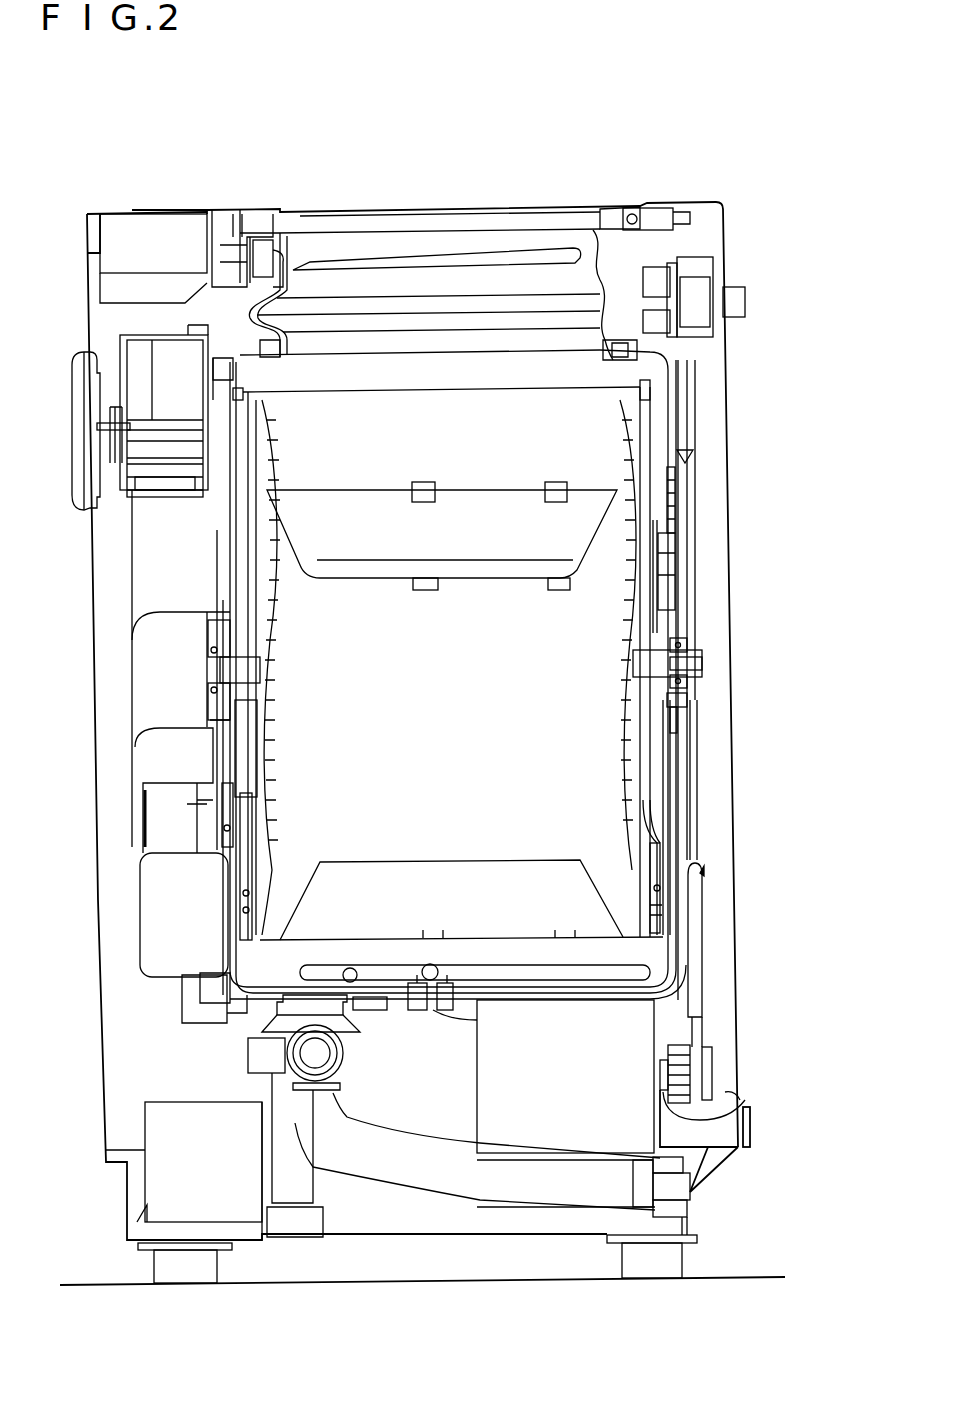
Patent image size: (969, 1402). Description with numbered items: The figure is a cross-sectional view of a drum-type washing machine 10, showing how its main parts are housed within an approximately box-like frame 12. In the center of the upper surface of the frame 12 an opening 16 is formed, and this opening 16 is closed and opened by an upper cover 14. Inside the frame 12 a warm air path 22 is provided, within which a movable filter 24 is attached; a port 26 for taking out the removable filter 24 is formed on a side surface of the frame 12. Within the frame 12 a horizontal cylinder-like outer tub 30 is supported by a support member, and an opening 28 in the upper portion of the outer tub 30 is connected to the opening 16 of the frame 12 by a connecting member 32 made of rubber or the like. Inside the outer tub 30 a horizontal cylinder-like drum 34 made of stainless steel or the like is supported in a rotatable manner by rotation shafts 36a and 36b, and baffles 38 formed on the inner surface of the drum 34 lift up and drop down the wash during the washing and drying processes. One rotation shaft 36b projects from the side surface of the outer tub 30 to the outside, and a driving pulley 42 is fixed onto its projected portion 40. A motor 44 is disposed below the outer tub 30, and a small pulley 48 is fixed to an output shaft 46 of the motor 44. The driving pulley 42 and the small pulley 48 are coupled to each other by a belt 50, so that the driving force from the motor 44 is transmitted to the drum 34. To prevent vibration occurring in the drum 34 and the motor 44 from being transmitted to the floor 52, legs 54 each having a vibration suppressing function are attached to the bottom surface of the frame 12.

The drum-type washing machine 10 is at (138, 153).
The frame 12 is at (722, 612).
The upper cover 14 is at (462, 204).
The opening 16 is at (220, 200).
The warm air path 22 is at (170, 574).
The movable filter 24 is at (120, 455).
The port 26 is at (88, 415).
The opening 28 is at (435, 373).
The outer tub 30 is at (668, 406).
The connecting member 32 is at (335, 282).
The drum 34 is at (580, 458).
The rotation shaft 36a is at (245, 673).
The rotation shaft 36b is at (645, 664).
The baffles 38 is at (492, 542).
The projected portion 40 is at (703, 660).
The driving pulley 42 is at (697, 824).
The motor 44 is at (483, 1091).
The output shaft 46 is at (740, 1096).
The small pulley 48 is at (712, 1058).
The belt 50 is at (704, 924).
The floor 52 is at (742, 1272).
The legs 54 is at (178, 1272).